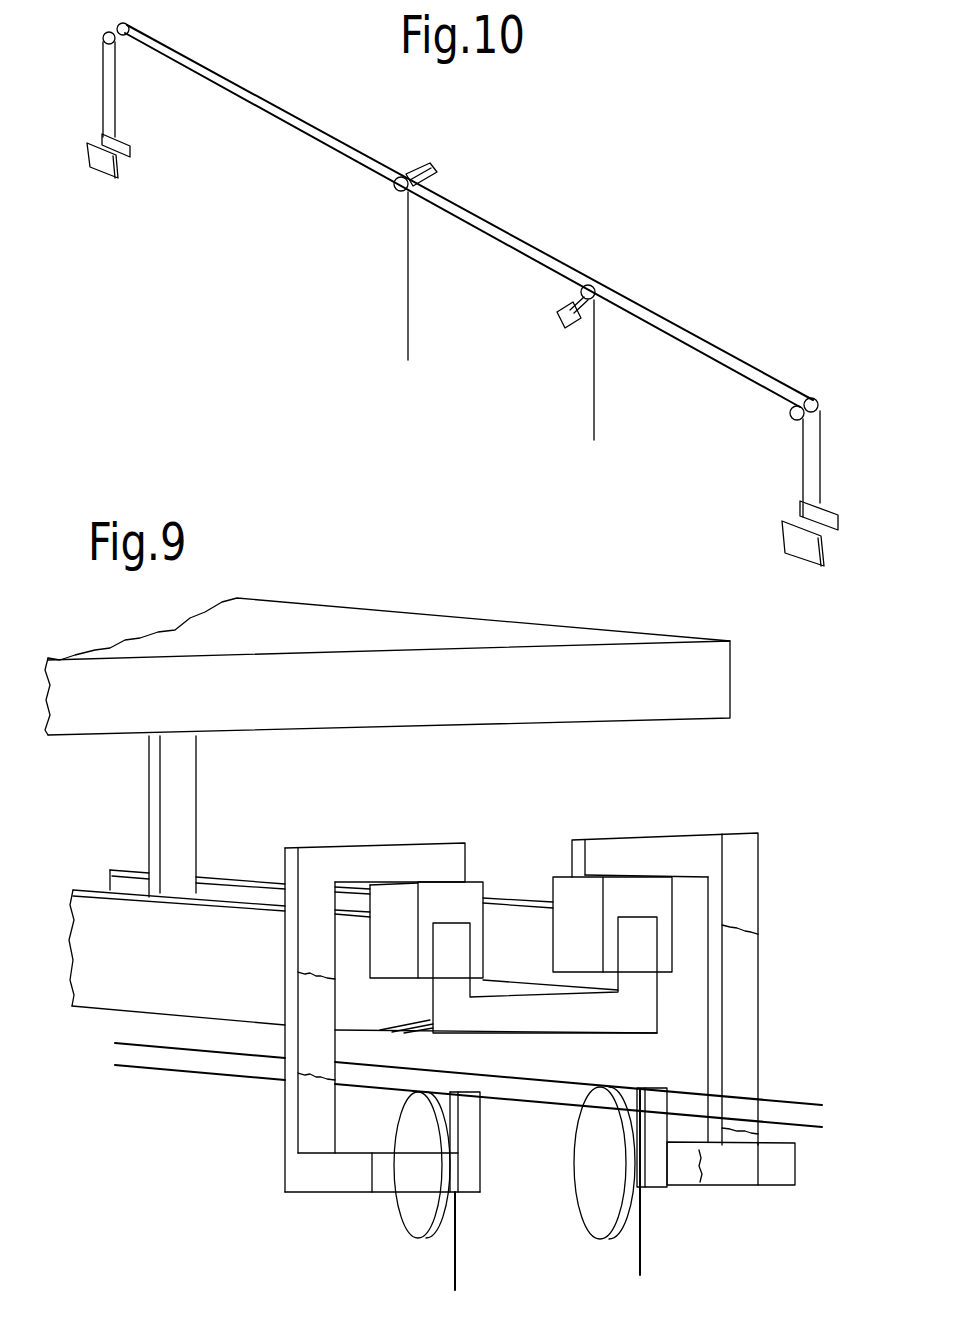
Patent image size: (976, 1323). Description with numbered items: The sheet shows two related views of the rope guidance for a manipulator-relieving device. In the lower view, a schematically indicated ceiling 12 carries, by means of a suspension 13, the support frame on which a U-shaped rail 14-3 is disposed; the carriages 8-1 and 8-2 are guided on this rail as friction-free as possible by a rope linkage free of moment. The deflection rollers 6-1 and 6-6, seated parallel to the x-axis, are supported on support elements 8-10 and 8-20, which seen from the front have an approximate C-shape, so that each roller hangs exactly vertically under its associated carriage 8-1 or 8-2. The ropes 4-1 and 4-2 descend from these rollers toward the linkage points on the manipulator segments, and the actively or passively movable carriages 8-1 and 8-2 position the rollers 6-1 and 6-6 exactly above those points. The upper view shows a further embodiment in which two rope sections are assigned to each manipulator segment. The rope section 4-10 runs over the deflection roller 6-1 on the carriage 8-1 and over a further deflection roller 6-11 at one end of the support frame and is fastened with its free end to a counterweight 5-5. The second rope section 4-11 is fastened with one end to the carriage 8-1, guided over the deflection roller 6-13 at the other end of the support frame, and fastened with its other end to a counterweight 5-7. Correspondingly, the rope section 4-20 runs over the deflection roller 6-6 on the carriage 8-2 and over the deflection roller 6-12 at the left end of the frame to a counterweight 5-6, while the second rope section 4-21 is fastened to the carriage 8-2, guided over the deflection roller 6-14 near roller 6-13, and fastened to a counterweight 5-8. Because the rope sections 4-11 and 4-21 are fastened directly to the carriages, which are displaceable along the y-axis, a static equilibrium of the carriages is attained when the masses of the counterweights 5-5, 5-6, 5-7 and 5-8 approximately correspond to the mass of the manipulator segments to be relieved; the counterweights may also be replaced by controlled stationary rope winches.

In FIG. 9, the rope 4-1 is at (643, 1253).
In FIG. 9, the rope 4-2 is at (458, 1266).
In FIG. 10, the rope section 4-10 is at (407, 303).
In FIG. 10, the rope section 4-20 is at (593, 392).
In FIG. 10, the second rope section 4-11 is at (752, 365).
In FIG. 10, the second rope section 4-21 is at (712, 372).
In FIG. 10, the counterweight 5-5 is at (133, 151).
In FIG. 10, the counterweight 5-6 is at (119, 173).
In FIG. 10, the counterweight 5-7 is at (830, 514).
In FIG. 10, the counterweight 5-8 is at (784, 540).
In FIG. 10, the deflection roller 6-1 is at (399, 192).
In FIG. 9, the deflection roller 6-1 is at (598, 1203).
In FIG. 10, the deflection roller 6-6 is at (594, 290).
In FIG. 9, the deflection roller 6-6 is at (412, 1215).
In FIG. 10, the deflection roller 6-11 is at (135, 27).
In FIG. 10, the deflection roller 6-12 is at (120, 58).
In FIG. 10, the deflection roller 6-13 is at (822, 407).
In FIG. 10, the deflection roller 6-14 is at (796, 420).
In FIG. 10, the carriage 8-1 is at (434, 175).
In FIG. 9, the carriage 8-1 is at (653, 887).
In FIG. 10, the carriage 8-2 is at (556, 318).
In FIG. 9, the carriage 8-2 is at (470, 898).
In FIG. 9, the support element 8-10 is at (748, 953).
In FIG. 9, the support element 8-20 is at (302, 1108).
In FIG. 9, the ceiling 12 is at (490, 636).
In FIG. 9, the suspension 13 is at (183, 788).
In FIG. 9, the U-shaped rail 14-3 is at (523, 908).